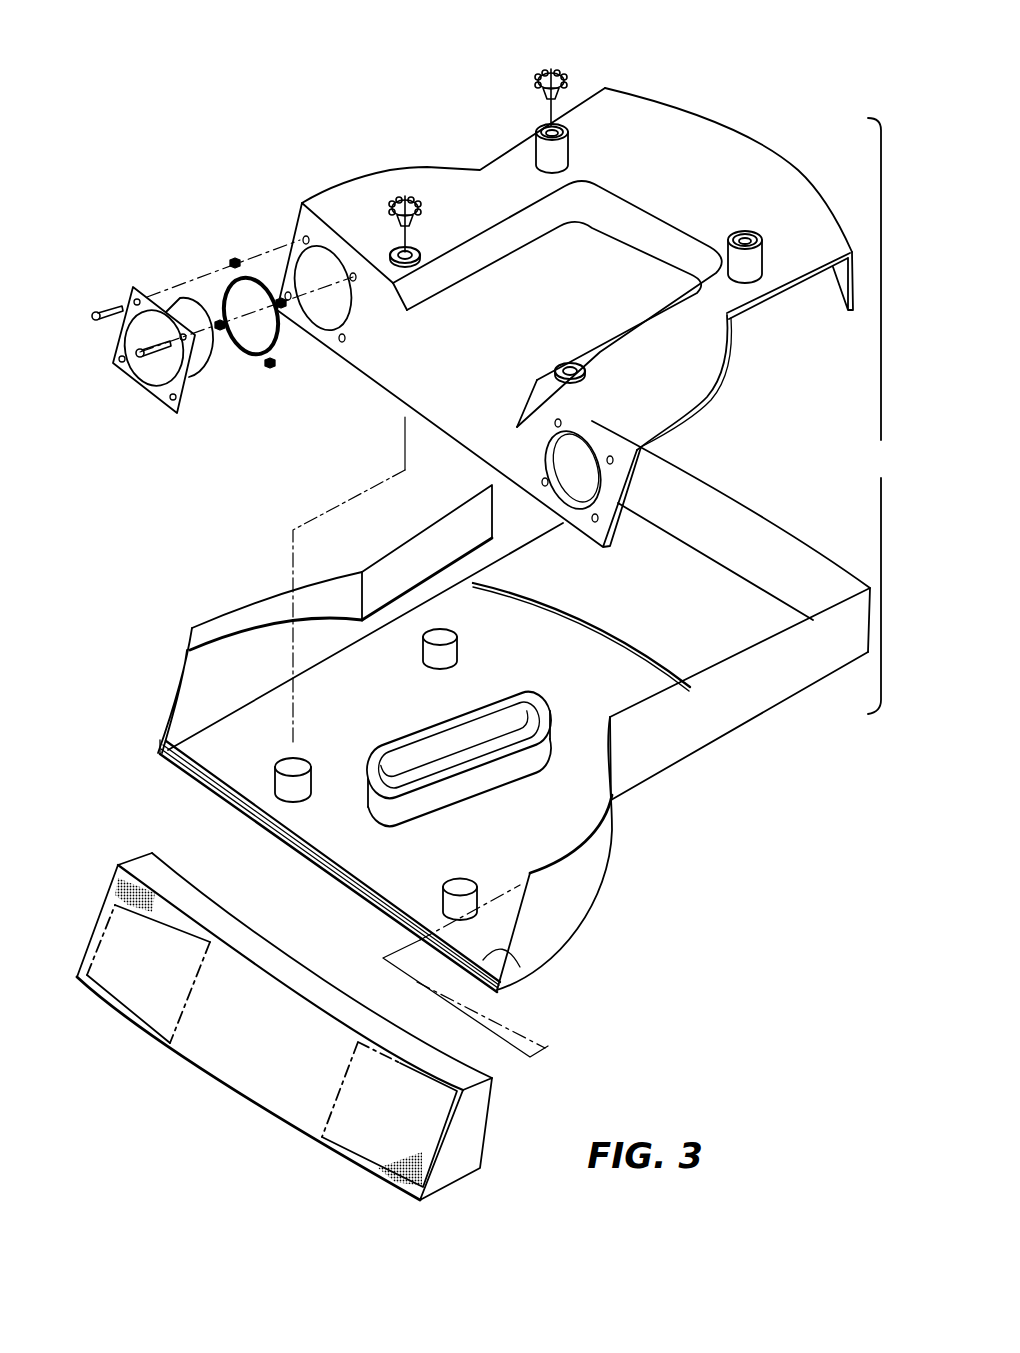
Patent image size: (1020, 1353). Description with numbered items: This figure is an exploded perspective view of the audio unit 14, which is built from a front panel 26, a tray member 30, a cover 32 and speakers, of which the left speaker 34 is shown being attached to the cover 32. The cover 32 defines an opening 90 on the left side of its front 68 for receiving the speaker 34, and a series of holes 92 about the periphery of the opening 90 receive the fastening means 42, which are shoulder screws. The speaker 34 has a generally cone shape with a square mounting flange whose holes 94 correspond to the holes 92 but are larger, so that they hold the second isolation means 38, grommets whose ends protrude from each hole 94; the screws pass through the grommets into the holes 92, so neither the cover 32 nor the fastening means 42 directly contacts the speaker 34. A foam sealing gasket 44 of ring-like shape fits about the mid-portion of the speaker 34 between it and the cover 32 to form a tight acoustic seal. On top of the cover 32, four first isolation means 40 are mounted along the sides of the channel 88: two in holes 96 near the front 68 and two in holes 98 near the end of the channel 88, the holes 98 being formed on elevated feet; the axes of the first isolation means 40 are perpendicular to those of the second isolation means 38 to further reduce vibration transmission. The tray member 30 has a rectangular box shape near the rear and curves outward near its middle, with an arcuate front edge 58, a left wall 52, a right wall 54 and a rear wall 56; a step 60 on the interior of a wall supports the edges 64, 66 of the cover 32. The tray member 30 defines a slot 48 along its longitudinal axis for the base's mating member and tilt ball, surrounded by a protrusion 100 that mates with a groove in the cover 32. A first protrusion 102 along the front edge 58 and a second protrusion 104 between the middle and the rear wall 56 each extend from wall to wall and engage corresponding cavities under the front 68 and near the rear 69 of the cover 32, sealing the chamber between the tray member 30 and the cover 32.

The audio unit 14 is at (879, 416).
The front panel 26 is at (263, 1112).
The tray member 30 is at (489, 707).
The cover 32 is at (547, 280).
The left speaker 34 is at (153, 393).
The second isolation means 38 is at (232, 260).
The first isolation means 40 is at (535, 80).
The fastening means 42 is at (100, 305).
The sealing gasket 44 is at (253, 357).
The slot 48 is at (525, 703).
The left wall 52 is at (657, 767).
The right wall 54 is at (174, 680).
The rear wall 56 is at (686, 532).
The front edge 58 is at (187, 787).
The step 60 is at (207, 647).
The left edge 64 is at (448, 170).
The right edge 66 is at (838, 282).
The front 68 is at (424, 421).
The rear 69 is at (766, 140).
The channel 88 is at (506, 312).
The opening 90 is at (322, 258).
The holes 92 is at (300, 236).
The holes 94 is at (135, 292).
The holes 96 is at (418, 254).
The holes 98 is at (567, 150).
The protrusion 100 is at (397, 747).
The first protrusion 102 is at (523, 980).
The second protrusion 104 is at (590, 612).